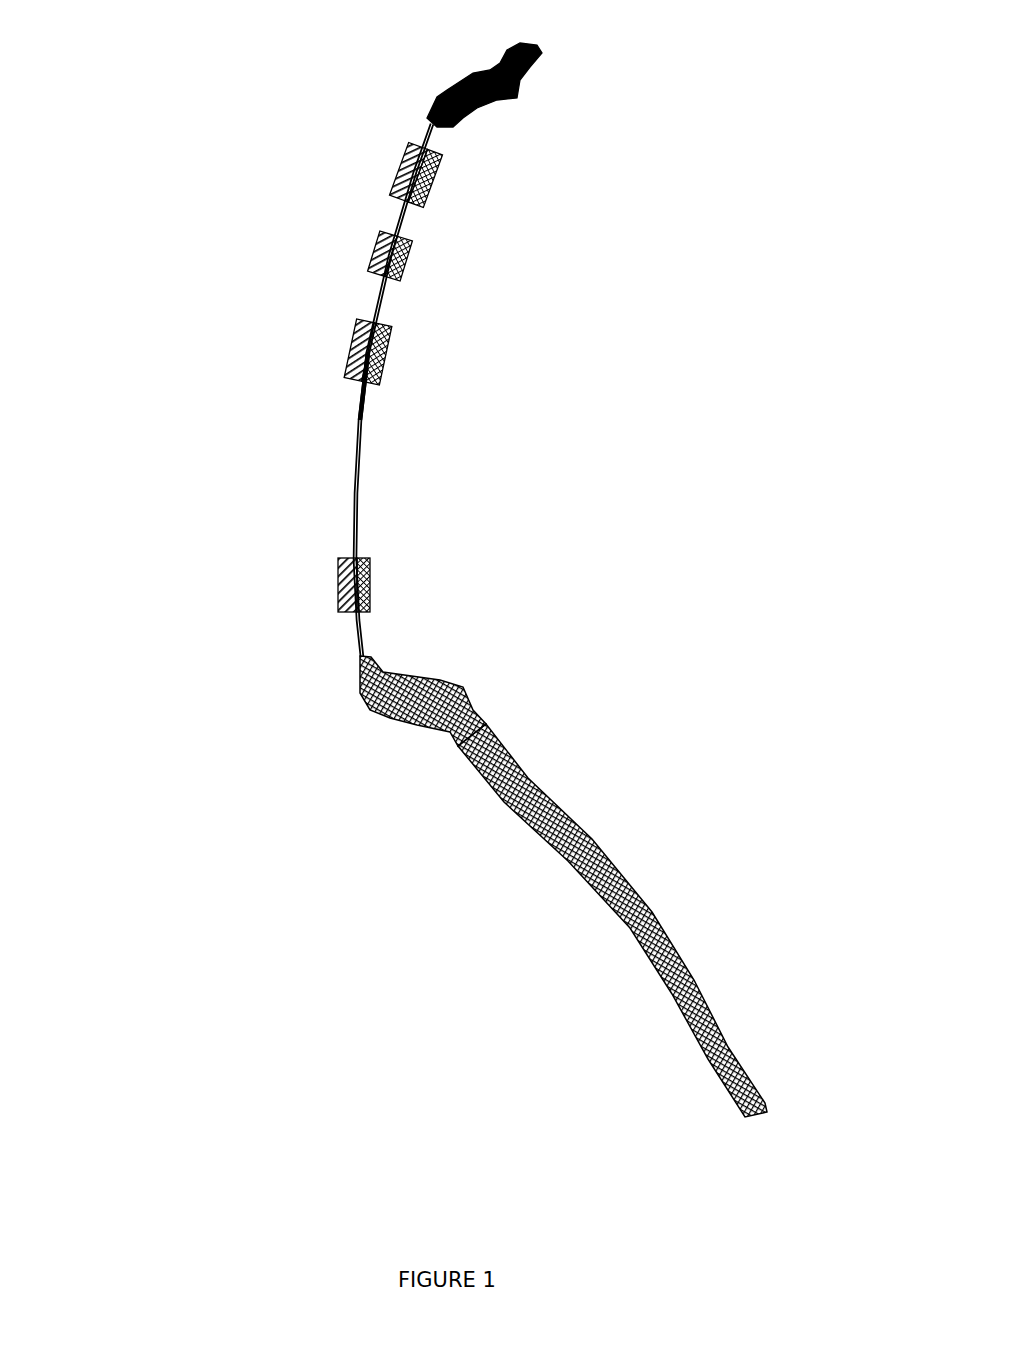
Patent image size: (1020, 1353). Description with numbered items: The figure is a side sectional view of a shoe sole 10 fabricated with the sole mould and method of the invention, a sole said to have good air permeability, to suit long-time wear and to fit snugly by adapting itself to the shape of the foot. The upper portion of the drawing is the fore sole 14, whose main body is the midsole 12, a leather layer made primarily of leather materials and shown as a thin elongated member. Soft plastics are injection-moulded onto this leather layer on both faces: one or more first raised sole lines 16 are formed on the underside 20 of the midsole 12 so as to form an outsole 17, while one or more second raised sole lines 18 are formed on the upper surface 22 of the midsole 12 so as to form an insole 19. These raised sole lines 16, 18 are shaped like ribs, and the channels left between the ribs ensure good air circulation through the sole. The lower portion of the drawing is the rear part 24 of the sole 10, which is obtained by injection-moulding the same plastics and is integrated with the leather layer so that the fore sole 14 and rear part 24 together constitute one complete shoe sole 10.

The shoe sole 10 is at (718, 187).
The midsole 12 is at (357, 493).
The fore sole 14 is at (205, 655).
The first raised sole lines 16 is at (356, 340).
The outsole 17 is at (416, 368).
The second raised sole lines 18 is at (390, 337).
The insole 19 is at (363, 152).
The underside 20 is at (357, 634).
The upper surface 22 is at (366, 650).
The rear part 24 is at (245, 1127).